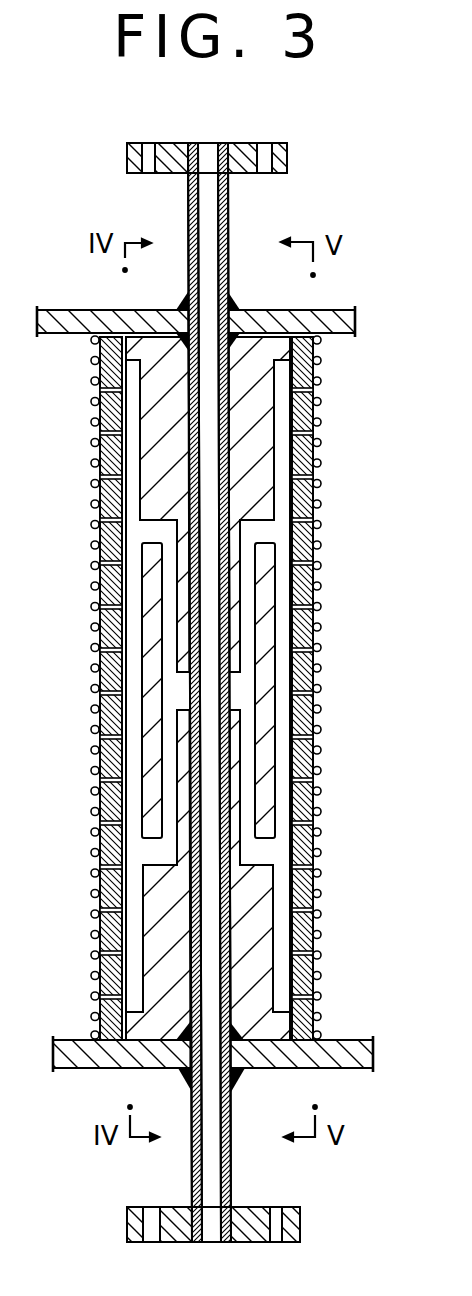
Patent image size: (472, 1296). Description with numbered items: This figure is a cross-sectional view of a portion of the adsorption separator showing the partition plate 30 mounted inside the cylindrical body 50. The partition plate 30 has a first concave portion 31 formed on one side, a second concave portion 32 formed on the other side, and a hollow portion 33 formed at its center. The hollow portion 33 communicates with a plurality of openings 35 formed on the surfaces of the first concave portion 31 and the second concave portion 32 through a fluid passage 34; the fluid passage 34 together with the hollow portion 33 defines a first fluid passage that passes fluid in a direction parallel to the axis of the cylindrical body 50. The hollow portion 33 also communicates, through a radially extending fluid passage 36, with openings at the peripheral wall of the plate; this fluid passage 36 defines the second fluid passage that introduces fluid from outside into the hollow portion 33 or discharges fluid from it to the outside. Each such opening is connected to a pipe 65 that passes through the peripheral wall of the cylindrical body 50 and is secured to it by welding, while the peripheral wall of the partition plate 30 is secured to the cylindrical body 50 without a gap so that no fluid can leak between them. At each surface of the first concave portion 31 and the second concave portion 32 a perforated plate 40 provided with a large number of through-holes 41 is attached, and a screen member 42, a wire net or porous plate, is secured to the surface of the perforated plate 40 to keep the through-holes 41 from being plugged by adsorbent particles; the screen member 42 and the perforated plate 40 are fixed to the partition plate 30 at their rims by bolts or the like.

The partition plate 30 is at (215, 688).
The first concave portion 31 is at (280, 373).
The second concave portion 32 is at (130, 940).
The hollow portion 33 is at (205, 697).
The fluid passage 34 is at (168, 766).
The openings 35 is at (150, 532).
The fluid passage 36 is at (207, 343).
The perforated plate 40 is at (318, 822).
The through-holes 41 is at (316, 888).
The screen member 42 is at (95, 378).
The cylindrical body 50 is at (77, 310).
The pipe 65 is at (228, 212).